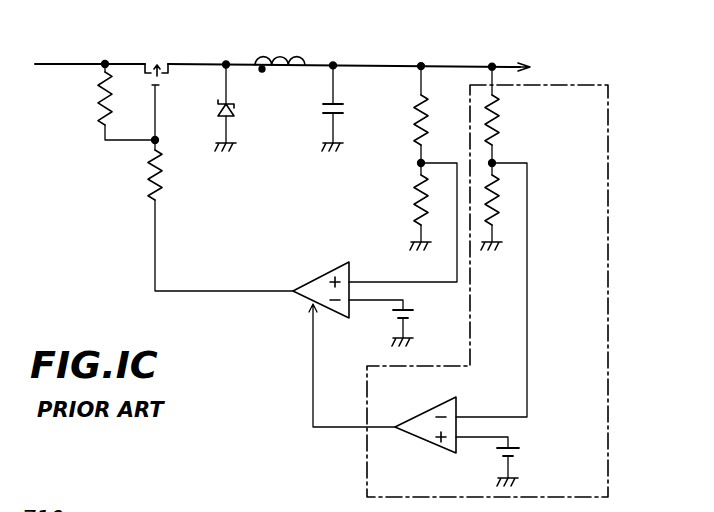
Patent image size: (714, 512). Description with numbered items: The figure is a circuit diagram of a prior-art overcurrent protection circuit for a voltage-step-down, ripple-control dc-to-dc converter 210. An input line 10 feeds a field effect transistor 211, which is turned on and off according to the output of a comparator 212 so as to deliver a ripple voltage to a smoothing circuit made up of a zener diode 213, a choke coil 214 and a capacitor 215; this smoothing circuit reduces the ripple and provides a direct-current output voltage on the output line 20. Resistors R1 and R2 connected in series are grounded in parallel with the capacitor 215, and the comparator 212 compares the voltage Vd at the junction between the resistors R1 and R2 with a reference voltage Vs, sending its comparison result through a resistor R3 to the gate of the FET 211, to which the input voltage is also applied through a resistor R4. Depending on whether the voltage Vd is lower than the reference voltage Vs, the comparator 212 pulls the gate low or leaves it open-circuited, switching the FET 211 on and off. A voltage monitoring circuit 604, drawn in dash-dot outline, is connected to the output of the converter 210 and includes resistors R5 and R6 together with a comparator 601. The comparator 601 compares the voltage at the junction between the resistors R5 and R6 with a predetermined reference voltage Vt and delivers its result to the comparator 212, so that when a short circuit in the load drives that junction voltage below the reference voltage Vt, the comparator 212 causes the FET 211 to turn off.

The input line 10 is at (73, 62).
The output line 20 is at (505, 62).
The dc-to-dc converter 210 is at (400, 62).
The field effect transistor 211 is at (165, 62).
The comparator 212 is at (328, 270).
The zener diode 213 is at (219, 112).
The choke coil 214 is at (282, 56).
The capacitor 215 is at (328, 116).
The comparator 601 is at (435, 406).
The voltage monitoring circuit 604 is at (608, 255).
The resistor R1 is at (439, 114).
The resistor R2 is at (406, 206).
The resistor R3 is at (220, 215).
The resistor R4 is at (109, 102).
The resistor R5 is at (510, 115).
The resistor R6 is at (505, 195).
The voltage Vd is at (369, 270).
The reference voltage Vs is at (400, 323).
The reference voltage Vt is at (505, 461).